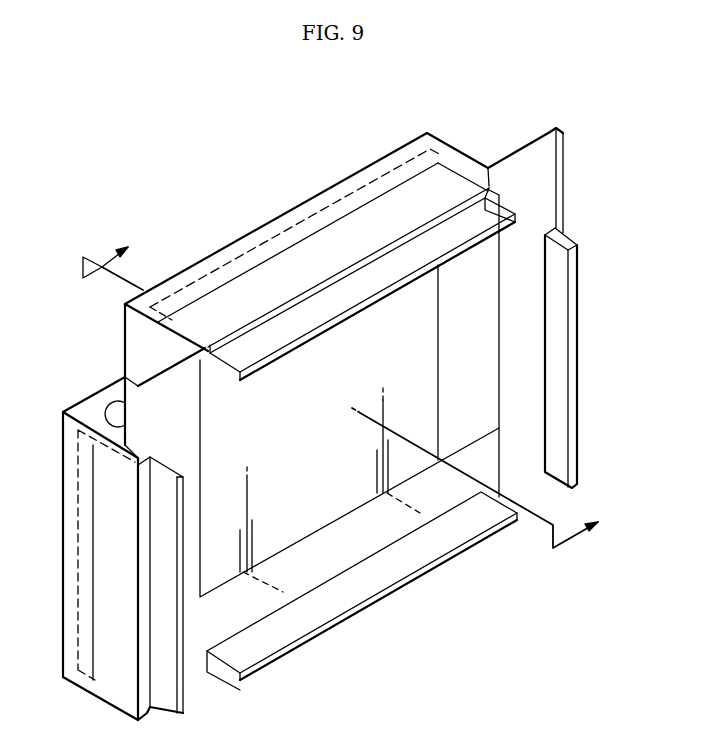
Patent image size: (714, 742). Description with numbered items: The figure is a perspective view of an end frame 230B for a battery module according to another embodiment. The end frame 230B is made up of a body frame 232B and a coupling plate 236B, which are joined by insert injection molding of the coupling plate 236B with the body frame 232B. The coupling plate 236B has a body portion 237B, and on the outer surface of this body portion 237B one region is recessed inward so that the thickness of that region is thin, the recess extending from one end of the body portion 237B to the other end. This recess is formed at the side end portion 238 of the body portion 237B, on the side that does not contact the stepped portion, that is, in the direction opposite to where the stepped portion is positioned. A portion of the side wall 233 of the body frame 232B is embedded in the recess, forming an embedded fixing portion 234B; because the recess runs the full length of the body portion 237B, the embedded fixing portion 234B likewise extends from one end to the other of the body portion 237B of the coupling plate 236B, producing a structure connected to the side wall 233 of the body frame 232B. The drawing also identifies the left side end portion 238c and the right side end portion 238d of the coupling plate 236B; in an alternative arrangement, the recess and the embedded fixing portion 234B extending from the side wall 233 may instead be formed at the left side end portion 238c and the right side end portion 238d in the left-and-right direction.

The end frame 230B is at (183, 153).
The body frame 232B is at (248, 236).
The side wall 233 is at (125, 304).
The embedded fixing portion 234B is at (353, 205).
The coupling plate 236B is at (407, 180).
The body portion 237B is at (218, 306).
The side end portion 238 is at (300, 220).
The left side end portion 238c is at (467, 168).
The right side end portion 238d is at (125, 352).